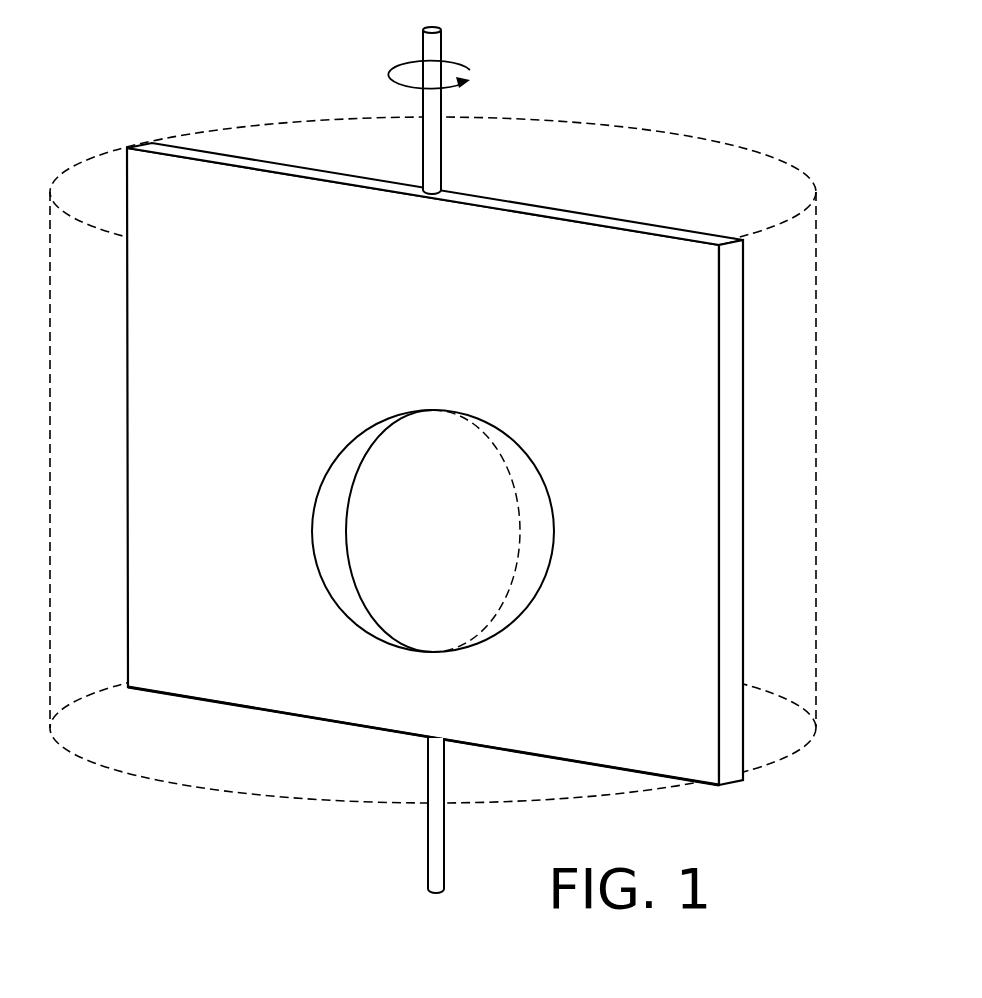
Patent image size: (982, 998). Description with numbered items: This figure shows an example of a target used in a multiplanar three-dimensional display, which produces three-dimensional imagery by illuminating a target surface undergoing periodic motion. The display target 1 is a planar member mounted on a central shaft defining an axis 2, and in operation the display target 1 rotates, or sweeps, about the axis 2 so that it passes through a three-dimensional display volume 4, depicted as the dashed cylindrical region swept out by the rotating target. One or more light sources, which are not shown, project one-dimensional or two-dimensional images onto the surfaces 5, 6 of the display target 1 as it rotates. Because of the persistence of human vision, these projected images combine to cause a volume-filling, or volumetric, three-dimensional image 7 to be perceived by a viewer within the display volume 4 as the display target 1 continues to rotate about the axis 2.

The display target 1 is at (410, 425).
The axis 2 is at (435, 43).
The 3-D display volume 4 is at (804, 540).
The surface 5 is at (150, 423).
The surface 6 is at (254, 156).
The 3-D image 7 is at (331, 555).